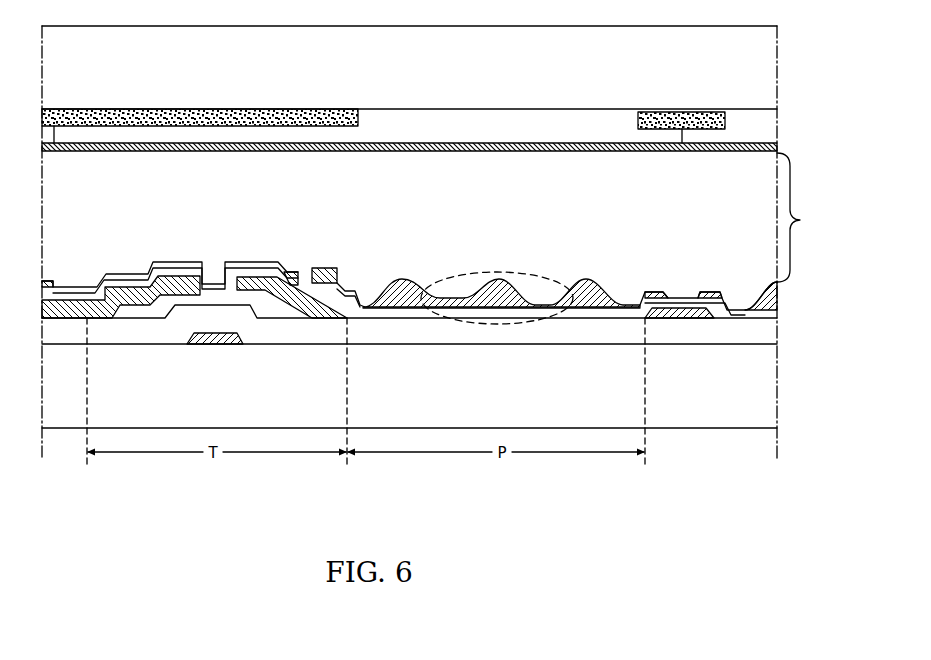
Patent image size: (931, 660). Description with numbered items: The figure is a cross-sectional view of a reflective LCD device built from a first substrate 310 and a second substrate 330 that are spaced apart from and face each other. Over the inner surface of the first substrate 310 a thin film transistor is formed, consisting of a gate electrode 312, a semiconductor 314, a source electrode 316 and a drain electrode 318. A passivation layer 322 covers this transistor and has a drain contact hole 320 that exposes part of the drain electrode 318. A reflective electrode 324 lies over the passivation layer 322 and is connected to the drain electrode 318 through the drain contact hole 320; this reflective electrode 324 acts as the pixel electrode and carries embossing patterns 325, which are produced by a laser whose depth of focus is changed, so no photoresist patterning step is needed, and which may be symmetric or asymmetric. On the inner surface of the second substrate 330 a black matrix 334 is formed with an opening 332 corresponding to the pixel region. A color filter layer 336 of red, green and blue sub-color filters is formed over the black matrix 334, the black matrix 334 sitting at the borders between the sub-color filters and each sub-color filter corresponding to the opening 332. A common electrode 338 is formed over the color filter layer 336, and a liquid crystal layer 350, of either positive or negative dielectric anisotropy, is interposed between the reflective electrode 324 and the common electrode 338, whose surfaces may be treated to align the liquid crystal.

The first substrate 310 is at (427, 391).
The gate electrode 312 is at (214, 346).
The semiconductor 314 is at (133, 312).
The source electrode 316 is at (173, 276).
The drain electrode 318 is at (247, 277).
The drain contact hole 320 is at (307, 266).
The passivation layer 322 is at (115, 282).
The reflective electrode 324 is at (52, 281).
The embossing patterns 325 is at (528, 272).
The second substrate 330 is at (412, 80).
The opening 332 is at (507, 107).
The black matrix 334 is at (234, 107).
The color filter layer 336 is at (768, 135).
The common electrode 338 is at (744, 152).
The liquid crystal layer 350 is at (810, 217).